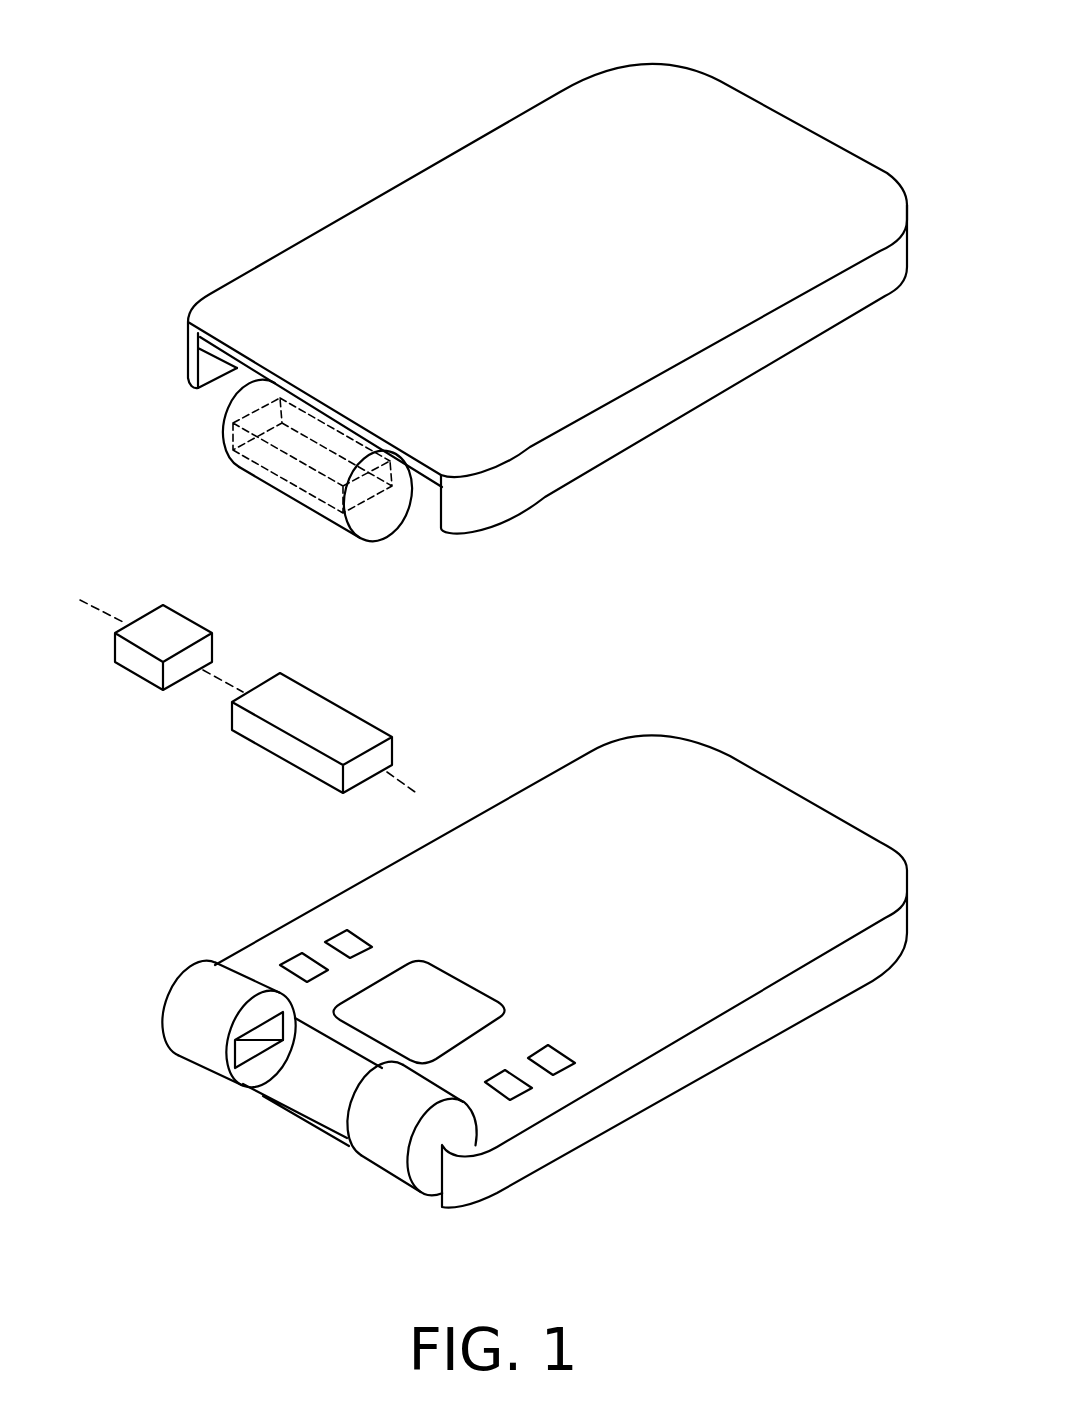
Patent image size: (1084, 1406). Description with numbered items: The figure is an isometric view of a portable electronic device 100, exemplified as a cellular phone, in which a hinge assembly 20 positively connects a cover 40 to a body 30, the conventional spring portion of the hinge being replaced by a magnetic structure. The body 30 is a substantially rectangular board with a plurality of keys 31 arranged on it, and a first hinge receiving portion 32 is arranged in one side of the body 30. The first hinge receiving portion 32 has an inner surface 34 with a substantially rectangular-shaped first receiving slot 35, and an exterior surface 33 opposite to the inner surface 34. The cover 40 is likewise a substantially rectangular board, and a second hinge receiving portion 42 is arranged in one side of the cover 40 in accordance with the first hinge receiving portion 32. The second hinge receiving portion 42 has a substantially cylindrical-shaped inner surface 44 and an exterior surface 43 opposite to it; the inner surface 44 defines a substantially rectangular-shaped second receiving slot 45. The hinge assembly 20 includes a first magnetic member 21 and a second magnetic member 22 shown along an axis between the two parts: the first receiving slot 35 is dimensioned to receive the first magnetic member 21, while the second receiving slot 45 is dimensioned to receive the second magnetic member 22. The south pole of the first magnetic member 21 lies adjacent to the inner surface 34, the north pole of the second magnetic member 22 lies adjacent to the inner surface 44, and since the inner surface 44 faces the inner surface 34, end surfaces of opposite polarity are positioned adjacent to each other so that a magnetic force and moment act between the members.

The portable electronic device 100 is at (474, 46).
The cover 40 is at (381, 150).
The second hinge receiving portion 42 is at (309, 525).
The exterior surface 43 is at (380, 515).
The inner surface 44 is at (222, 427).
The second receiving slot 45 is at (248, 478).
The hinge assembly 20 is at (93, 747).
The first magnetic member 21 is at (150, 667).
The second magnetic member 22 is at (277, 738).
The body 30 is at (754, 1087).
The keys 31 is at (553, 800).
The first hinge receiving portion 32 is at (174, 1068).
The exterior surface 33 is at (178, 990).
The inner surface 34 is at (237, 1073).
The first receiving slot 35 is at (247, 1047).